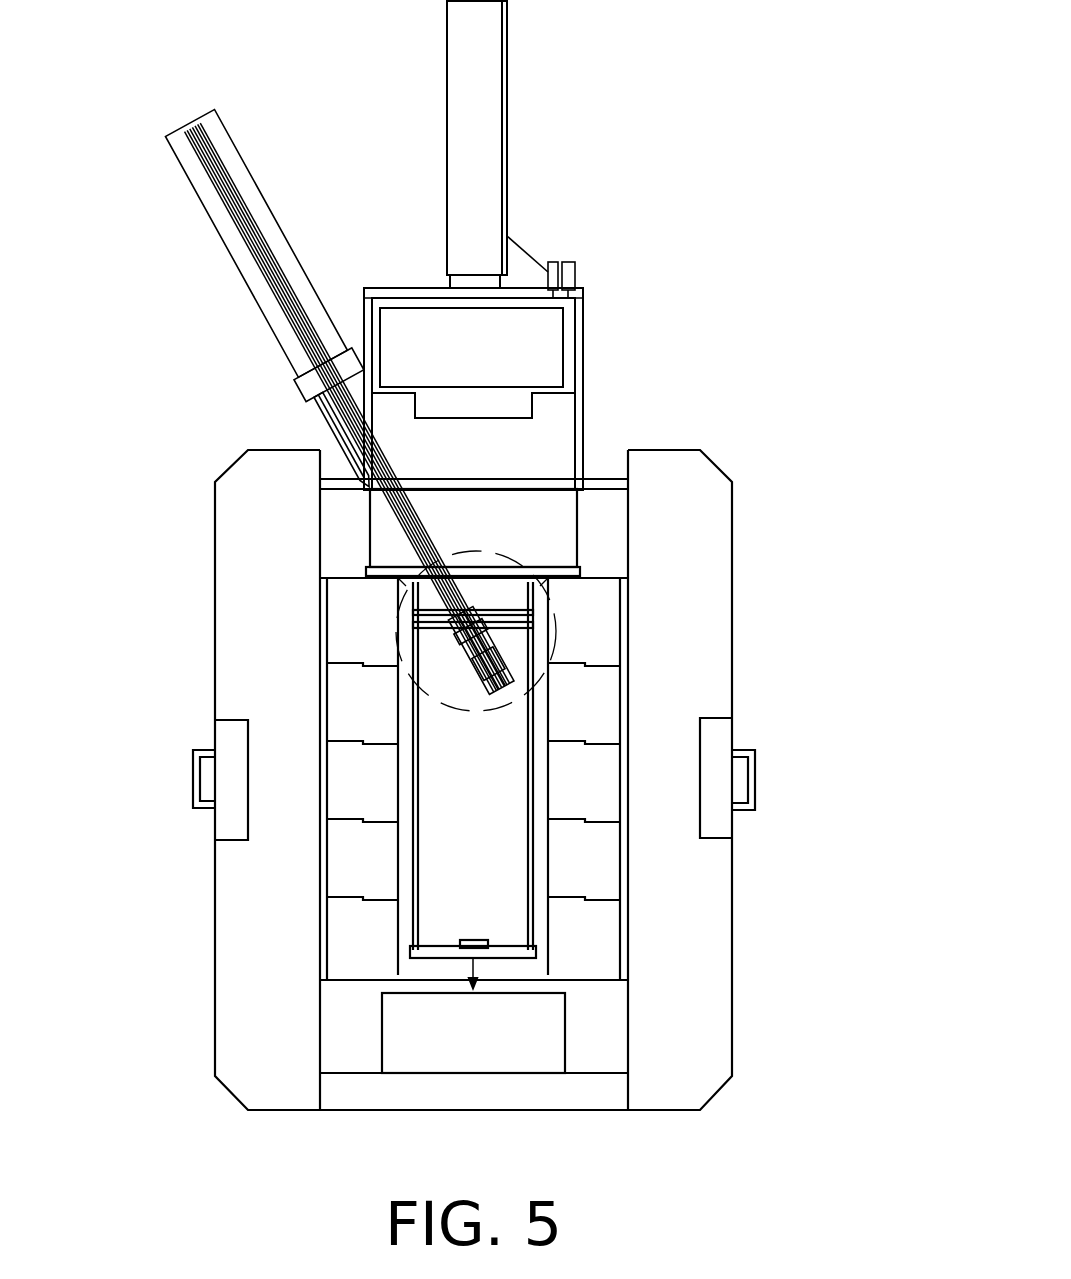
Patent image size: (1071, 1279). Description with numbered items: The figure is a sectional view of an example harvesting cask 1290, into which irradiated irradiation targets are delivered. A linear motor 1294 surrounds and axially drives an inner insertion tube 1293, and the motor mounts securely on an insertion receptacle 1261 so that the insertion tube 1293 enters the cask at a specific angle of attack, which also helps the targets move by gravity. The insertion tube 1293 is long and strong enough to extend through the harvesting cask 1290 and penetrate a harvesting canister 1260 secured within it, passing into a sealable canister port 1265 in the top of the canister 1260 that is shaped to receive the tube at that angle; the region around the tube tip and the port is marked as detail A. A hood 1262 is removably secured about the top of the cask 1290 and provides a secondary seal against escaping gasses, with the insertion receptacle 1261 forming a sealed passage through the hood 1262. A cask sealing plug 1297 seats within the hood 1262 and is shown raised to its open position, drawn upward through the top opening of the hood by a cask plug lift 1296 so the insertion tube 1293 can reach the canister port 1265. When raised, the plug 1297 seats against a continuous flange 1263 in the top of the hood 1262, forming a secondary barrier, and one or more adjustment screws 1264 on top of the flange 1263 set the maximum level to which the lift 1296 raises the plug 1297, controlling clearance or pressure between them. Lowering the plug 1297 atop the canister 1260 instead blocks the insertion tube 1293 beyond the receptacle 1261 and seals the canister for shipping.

The harvesting cask 1290 is at (785, 106).
The harvesting canister 1260 is at (530, 855).
The insertion receptacle 1261 is at (324, 396).
The hood 1262 is at (518, 331).
The continuous flange 1263 is at (387, 288).
The adjustment screws 1264 is at (577, 268).
The canister port 1265 is at (478, 650).
The inner insertion tube 1293 is at (262, 268).
The linear motor 1294 is at (195, 190).
The cask plug lift 1296 is at (490, 160).
The cask sealing plug 1297 is at (528, 342).
The detail region A is at (556, 622).